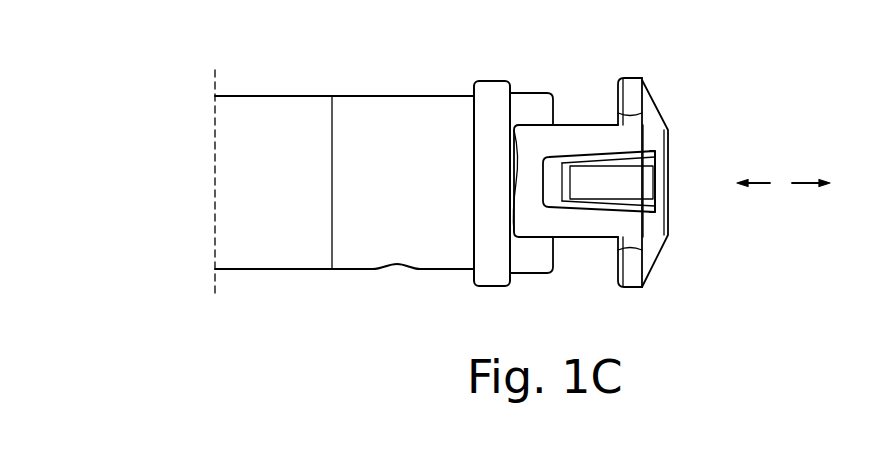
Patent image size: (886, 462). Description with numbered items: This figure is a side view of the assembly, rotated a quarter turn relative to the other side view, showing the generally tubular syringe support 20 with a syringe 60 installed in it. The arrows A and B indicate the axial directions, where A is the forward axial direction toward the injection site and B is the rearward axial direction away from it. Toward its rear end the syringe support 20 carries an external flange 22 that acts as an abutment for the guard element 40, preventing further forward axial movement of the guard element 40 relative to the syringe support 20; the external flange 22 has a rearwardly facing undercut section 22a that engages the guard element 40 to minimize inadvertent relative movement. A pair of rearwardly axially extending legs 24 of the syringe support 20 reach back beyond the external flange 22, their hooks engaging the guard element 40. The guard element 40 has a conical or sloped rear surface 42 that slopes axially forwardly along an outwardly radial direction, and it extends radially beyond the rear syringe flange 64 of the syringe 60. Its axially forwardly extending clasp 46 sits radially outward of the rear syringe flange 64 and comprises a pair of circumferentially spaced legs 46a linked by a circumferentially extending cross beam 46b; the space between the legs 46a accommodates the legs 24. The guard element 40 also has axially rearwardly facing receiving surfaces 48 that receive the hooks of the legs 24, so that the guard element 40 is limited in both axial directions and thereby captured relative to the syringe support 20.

The syringe support 20 is at (384, 90).
The external flange 22 is at (493, 93).
The rearwardly facing undercut section 22a is at (517, 228).
The rearwardly axially extending legs 24 is at (620, 190).
The guard element 40 is at (593, 117).
The sloped rear surface 42 is at (653, 248).
The clasp 46 is at (589, 245).
The legs of the clasp 46a is at (628, 132).
The cross beam 46b is at (528, 165).
The axially rearwardly facing receiving surfaces 48 is at (652, 156).
The syringe 60 is at (565, 116).
The rear syringe flange 64 is at (630, 95).
The forward axial direction A is at (756, 187).
The rearward axial direction B is at (812, 187).